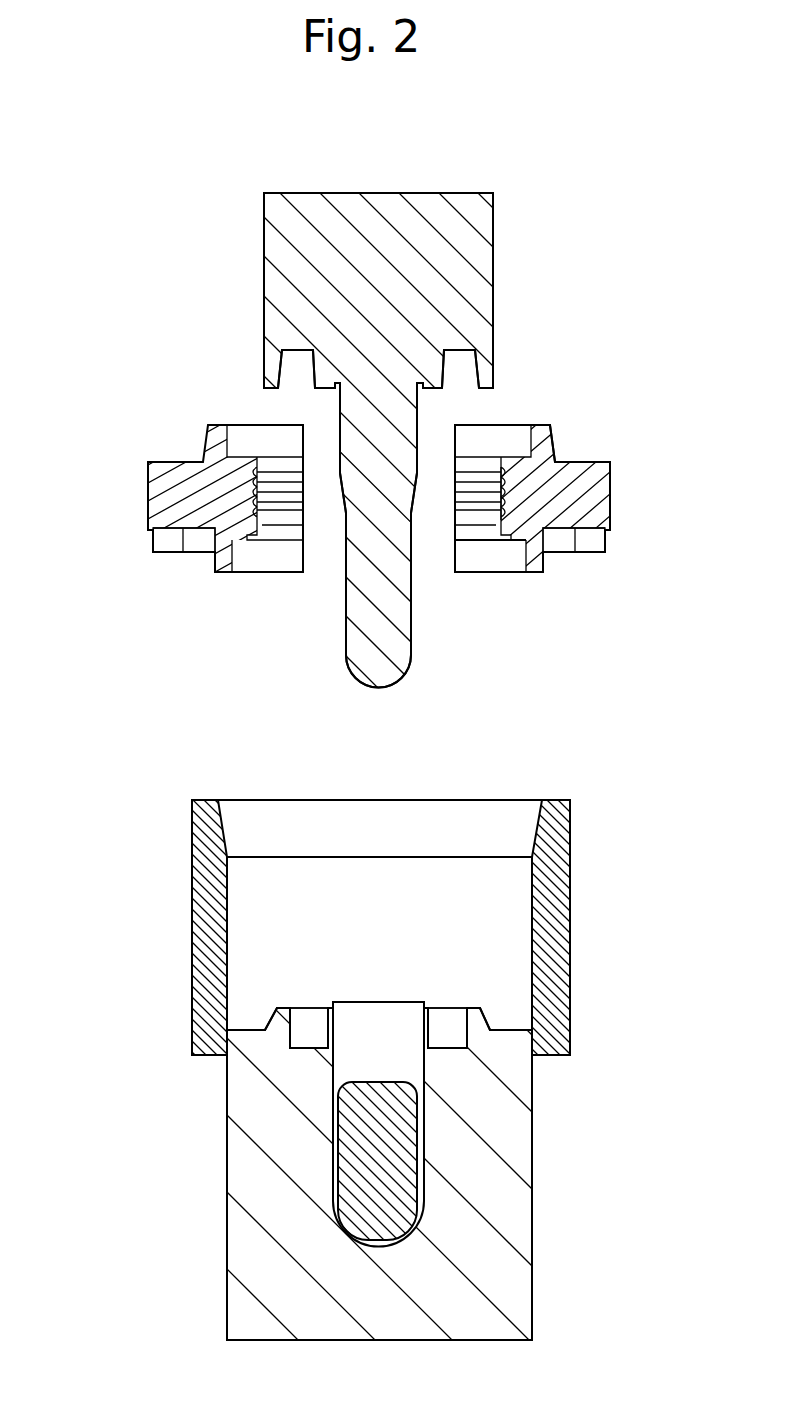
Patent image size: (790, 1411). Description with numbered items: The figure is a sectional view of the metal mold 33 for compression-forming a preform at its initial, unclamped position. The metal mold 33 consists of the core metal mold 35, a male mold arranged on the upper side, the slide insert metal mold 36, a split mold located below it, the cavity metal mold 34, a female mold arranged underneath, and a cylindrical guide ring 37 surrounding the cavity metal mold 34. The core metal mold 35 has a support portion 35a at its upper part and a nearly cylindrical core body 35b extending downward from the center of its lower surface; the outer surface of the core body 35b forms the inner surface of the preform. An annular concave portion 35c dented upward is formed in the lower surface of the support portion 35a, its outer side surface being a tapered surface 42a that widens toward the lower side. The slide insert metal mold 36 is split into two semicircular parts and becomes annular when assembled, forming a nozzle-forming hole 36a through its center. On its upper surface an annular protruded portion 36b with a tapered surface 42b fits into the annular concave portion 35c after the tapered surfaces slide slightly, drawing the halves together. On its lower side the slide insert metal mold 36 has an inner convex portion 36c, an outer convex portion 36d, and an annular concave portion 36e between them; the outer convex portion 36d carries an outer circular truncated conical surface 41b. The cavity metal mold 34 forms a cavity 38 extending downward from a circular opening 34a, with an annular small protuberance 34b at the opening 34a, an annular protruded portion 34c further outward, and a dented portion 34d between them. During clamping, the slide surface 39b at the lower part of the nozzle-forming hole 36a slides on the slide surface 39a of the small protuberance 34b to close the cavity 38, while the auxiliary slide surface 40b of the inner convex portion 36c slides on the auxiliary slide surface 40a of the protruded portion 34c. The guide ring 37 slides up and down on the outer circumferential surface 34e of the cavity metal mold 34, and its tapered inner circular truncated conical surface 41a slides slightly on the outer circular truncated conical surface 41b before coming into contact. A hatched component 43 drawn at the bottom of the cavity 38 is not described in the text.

The metal mold for compression forming 33 is at (548, 192).
The core metal mold 35 is at (283, 190).
The support portion 35a is at (457, 198).
The core body 35b is at (400, 648).
The annular concave portion 35c is at (465, 374).
The tapered surface 42a is at (292, 372).
The tapered surface 42b is at (218, 433).
The slide insert metal mold 36 is at (611, 488).
The nozzle-forming hole 36a is at (484, 480).
The annular protruded portion 36b is at (550, 446).
The inner convex portion 36c is at (540, 570).
The outer convex portion 36d is at (157, 540).
The annular concave portion 36e is at (183, 553).
The auxiliary slide surface 40b is at (216, 570).
The slide surface 39b is at (507, 570).
The outer circular truncated conical surface 41b is at (607, 540).
The guide ring 37 is at (583, 913).
The inner circular truncated conical surface 41a is at (530, 822).
The cavity metal mold 34 is at (535, 1158).
The opening 34a is at (374, 1002).
The small protuberance 34b is at (432, 1040).
The protruded portion 34c is at (490, 1020).
The dented portion 34d is at (306, 1046).
The outer circumferential surface 34e is at (227, 1297).
The cavity 38 is at (343, 1073).
The slide surface 39a is at (428, 1012).
The auxiliary slide surface 40a is at (290, 1012).
The ejector insert 43 is at (398, 1215).